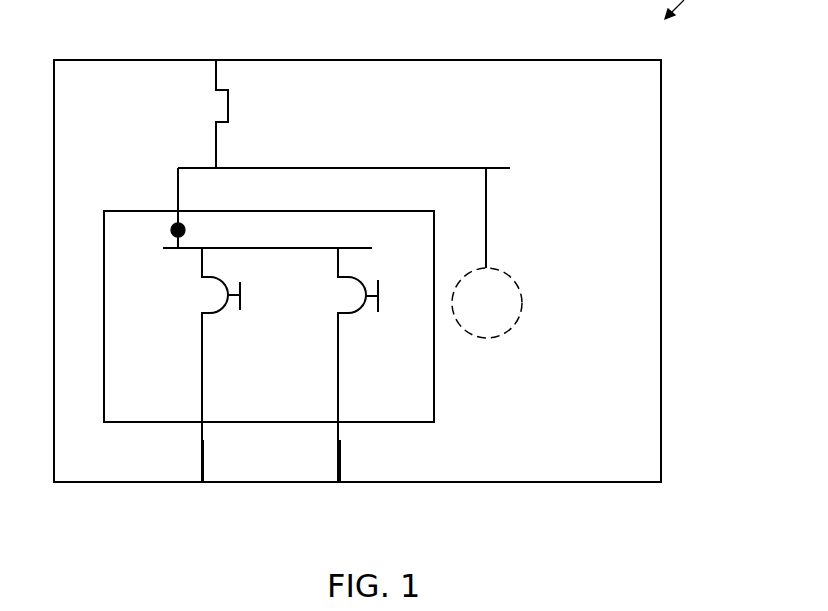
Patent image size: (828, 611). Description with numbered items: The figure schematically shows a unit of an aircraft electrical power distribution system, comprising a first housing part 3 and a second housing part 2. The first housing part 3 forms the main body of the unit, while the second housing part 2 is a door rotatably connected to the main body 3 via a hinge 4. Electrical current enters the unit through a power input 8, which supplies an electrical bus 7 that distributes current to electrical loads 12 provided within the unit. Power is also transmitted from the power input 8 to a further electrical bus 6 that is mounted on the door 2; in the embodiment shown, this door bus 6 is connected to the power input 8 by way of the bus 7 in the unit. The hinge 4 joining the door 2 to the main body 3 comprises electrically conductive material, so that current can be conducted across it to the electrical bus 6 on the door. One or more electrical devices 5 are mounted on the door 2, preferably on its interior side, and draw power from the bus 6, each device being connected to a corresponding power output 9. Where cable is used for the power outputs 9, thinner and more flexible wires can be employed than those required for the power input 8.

The second housing part 2 is at (130, 413).
The first housing part 3 is at (653, 411).
The hinge 4 is at (168, 231).
The electrical devices 5 is at (243, 298).
The electrical bus 6 is at (258, 248).
The electrical bus 7 is at (428, 168).
The power input 8 is at (216, 60).
The power outputs 9 is at (203, 483).
The electrical loads 12 is at (518, 273).